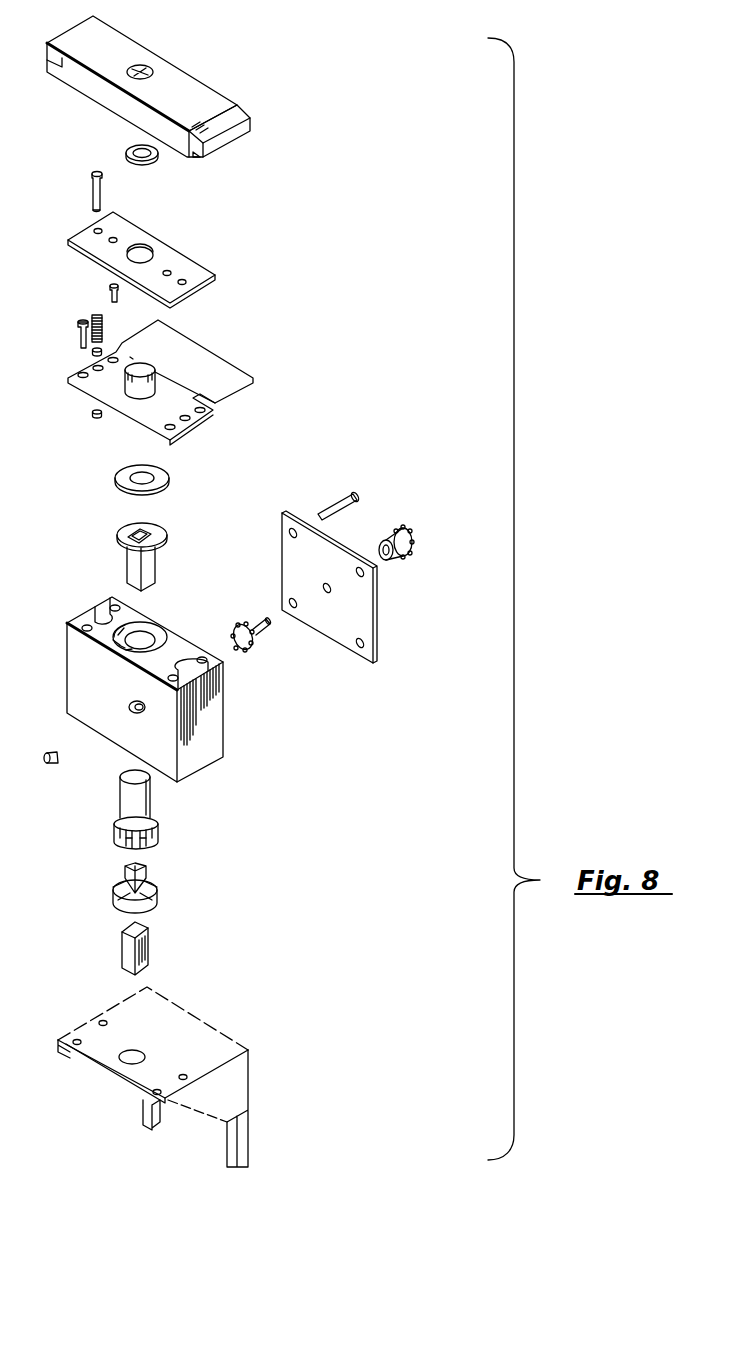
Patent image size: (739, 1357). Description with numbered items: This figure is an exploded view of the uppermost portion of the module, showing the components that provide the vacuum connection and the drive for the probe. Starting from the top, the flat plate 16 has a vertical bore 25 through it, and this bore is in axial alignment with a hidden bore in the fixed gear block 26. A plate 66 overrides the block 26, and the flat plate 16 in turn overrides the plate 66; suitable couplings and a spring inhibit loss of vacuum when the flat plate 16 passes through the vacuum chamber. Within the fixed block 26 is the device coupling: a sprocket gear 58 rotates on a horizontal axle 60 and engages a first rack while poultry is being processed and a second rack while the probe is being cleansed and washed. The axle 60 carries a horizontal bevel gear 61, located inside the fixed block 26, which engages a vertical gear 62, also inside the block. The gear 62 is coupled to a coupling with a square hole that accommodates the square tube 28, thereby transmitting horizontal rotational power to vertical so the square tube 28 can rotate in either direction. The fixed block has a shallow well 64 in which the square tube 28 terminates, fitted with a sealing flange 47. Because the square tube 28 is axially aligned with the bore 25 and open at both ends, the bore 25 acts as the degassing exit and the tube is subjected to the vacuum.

The flat plate 16 is at (173, 83).
The vertical bore 25 is at (145, 68).
The plate 66 is at (200, 363).
The sealing flange 47 is at (153, 530).
The shallow well 64 is at (152, 627).
The fixed gear block 26 is at (213, 728).
The horizontal axle 60 is at (268, 633).
The sprocket gear 58 is at (408, 560).
The horizontal bevel gear 61 is at (253, 647).
The vertical gear 62 is at (157, 822).
The square tube 28 is at (148, 957).